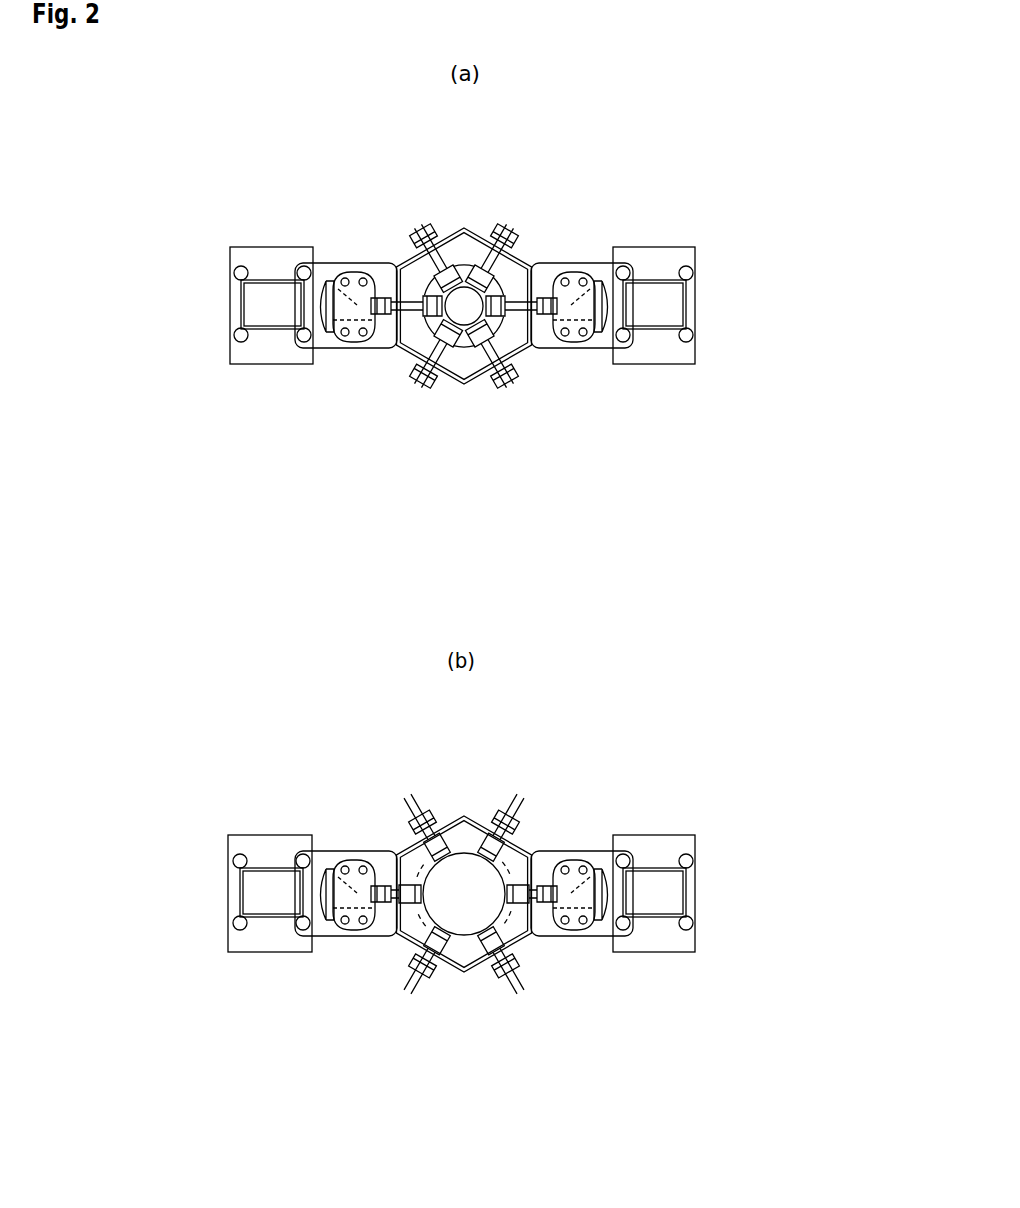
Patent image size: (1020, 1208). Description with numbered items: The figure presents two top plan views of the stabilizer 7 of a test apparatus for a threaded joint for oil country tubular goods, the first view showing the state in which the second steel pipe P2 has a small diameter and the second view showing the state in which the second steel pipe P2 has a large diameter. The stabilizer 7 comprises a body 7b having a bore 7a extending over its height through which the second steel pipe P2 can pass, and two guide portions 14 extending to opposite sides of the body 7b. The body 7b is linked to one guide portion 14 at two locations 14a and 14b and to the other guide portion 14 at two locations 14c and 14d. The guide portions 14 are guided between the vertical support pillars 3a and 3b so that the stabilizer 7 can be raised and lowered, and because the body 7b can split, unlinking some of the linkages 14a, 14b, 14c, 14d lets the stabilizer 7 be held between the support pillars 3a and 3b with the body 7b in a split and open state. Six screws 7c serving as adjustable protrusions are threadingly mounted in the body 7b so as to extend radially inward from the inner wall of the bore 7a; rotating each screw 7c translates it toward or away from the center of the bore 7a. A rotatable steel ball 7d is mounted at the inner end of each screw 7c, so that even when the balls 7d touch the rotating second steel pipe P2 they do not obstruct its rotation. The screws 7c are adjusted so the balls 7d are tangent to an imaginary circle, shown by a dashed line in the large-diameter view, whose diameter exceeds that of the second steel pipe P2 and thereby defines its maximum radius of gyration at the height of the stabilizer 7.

In FIG. 2a, the support pillar 3a is at (275, 249).
In FIG. 2b, the support pillar 3a is at (272, 837).
In FIG. 2a, the support pillar 3b is at (648, 249).
In FIG. 2b, the support pillar 3b is at (648, 837).
In FIG. 2a, the stabilizer 7 is at (463, 211).
In FIG. 2b, the stabilizer 7 is at (462, 799).
In FIG. 2a, the bore 7a is at (463, 362).
In FIG. 2b, the bore 7a is at (459, 952).
In FIG. 2a, the body 7b is at (452, 272).
In FIG. 2b, the body 7b is at (450, 830).
In FIG. 2a, the screw 7c is at (419, 231).
In FIG. 2b, the screw 7c is at (412, 815).
In FIG. 2a, the steel ball 7d is at (431, 270).
In FIG. 2b, the steel ball 7d is at (428, 852).
In FIG. 2a, the guide portion 14 is at (335, 262).
In FIG. 2b, the guide portion 14 is at (335, 850).
In FIG. 2a, the linkage location 14a is at (348, 275).
In FIG. 2b, the linkage location 14a is at (347, 865).
In FIG. 2a, the linkage location 14b is at (357, 345).
In FIG. 2b, the linkage location 14b is at (353, 932).
In FIG. 2a, the linkage location 14c is at (580, 272).
In FIG. 2b, the linkage location 14c is at (580, 860).
In FIG. 2a, the linkage location 14d is at (580, 344).
In FIG. 2b, the linkage location 14d is at (580, 932).
In FIG. 2a, the second steel pipe P2 is at (469, 287).
In FIG. 2b, the second steel pipe P2 is at (484, 857).